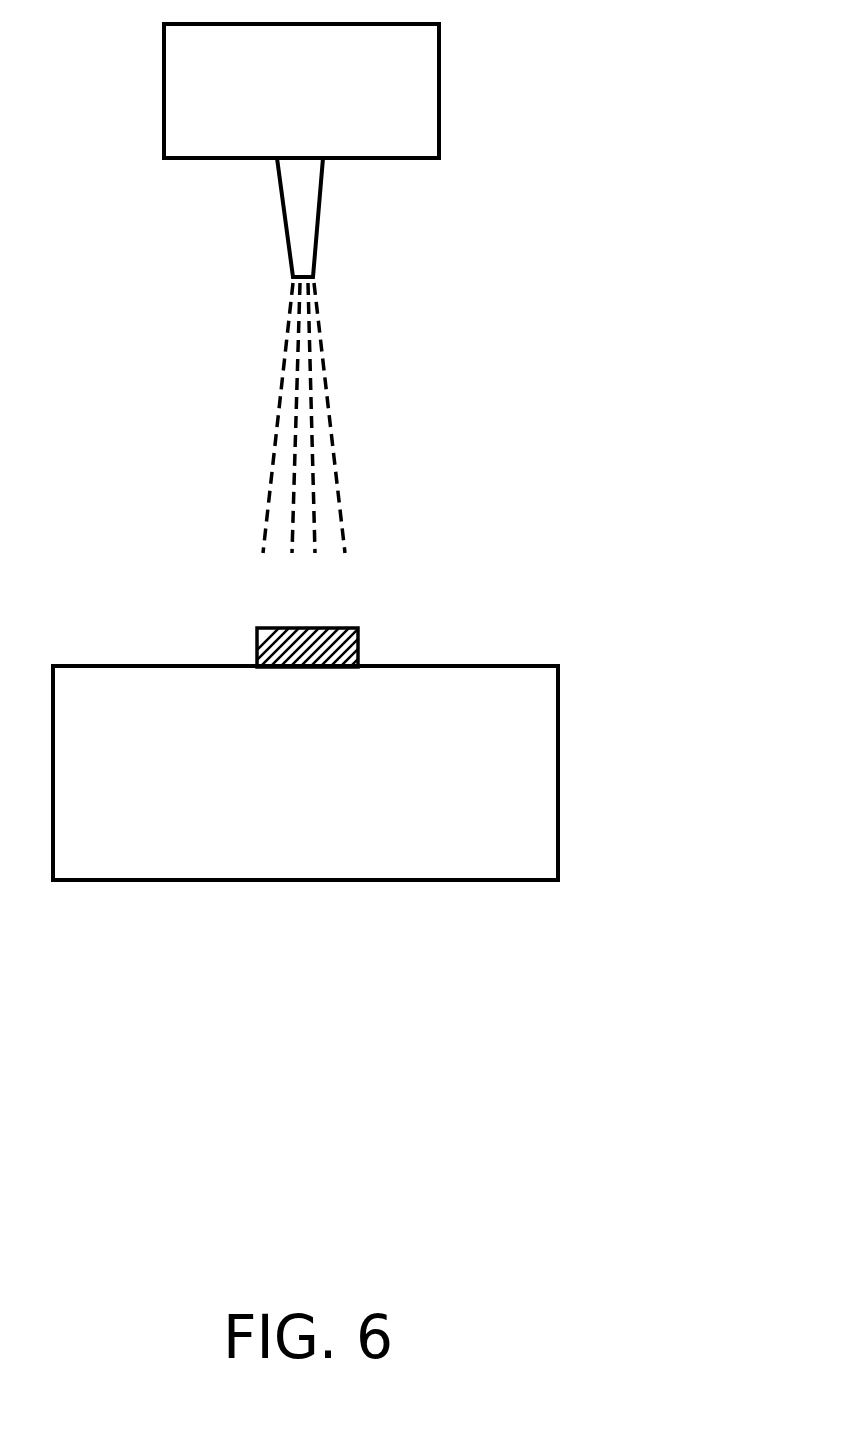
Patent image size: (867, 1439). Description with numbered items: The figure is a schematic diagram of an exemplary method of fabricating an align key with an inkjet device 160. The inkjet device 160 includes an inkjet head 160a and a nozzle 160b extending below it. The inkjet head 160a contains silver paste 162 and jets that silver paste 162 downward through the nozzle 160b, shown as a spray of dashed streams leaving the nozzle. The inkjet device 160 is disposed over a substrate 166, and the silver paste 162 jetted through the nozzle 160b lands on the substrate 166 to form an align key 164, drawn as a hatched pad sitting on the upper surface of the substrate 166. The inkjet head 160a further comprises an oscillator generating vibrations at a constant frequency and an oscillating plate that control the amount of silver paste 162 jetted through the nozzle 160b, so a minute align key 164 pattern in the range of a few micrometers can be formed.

The inkjet device 160 is at (463, 150).
The inkjet head 160a is at (441, 100).
The nozzle 160b is at (318, 212).
The silver paste 162 is at (342, 505).
The align key 164 is at (362, 647).
The substrate 166 is at (540, 768).